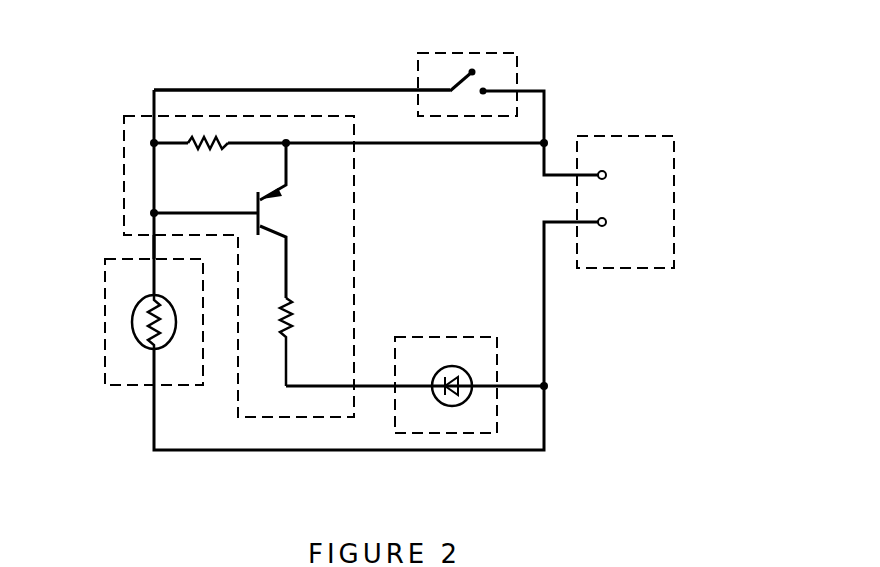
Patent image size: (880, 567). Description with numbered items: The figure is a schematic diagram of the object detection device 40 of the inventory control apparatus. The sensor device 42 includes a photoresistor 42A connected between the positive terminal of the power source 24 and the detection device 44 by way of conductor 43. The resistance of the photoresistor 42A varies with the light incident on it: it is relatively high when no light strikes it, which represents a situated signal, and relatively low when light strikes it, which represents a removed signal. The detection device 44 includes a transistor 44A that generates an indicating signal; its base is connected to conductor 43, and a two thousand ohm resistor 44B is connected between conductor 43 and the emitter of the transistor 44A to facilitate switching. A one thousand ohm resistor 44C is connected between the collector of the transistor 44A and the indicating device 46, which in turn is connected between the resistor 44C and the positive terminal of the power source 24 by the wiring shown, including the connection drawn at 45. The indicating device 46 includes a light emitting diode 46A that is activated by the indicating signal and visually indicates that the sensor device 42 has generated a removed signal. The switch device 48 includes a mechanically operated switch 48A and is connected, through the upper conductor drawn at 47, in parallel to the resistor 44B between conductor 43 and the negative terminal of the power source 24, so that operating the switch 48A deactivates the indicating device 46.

The object detection device 40 is at (691, 116).
The power source 24 is at (660, 268).
The sensor device 42 is at (120, 387).
The photoresistor 42A is at (132, 323).
The conductor 43 is at (154, 252).
The detection device 44 is at (123, 157).
The transistor 44A is at (272, 190).
The resistor 44B is at (213, 140).
The resistor 44C is at (293, 310).
The conductor 45 is at (377, 388).
The indicating device 46 is at (500, 370).
The light emitting diode 46A is at (453, 406).
The conductor 47 is at (333, 90).
The switch device 48 is at (517, 52).
The mechanically operated switch 48A is at (460, 80).